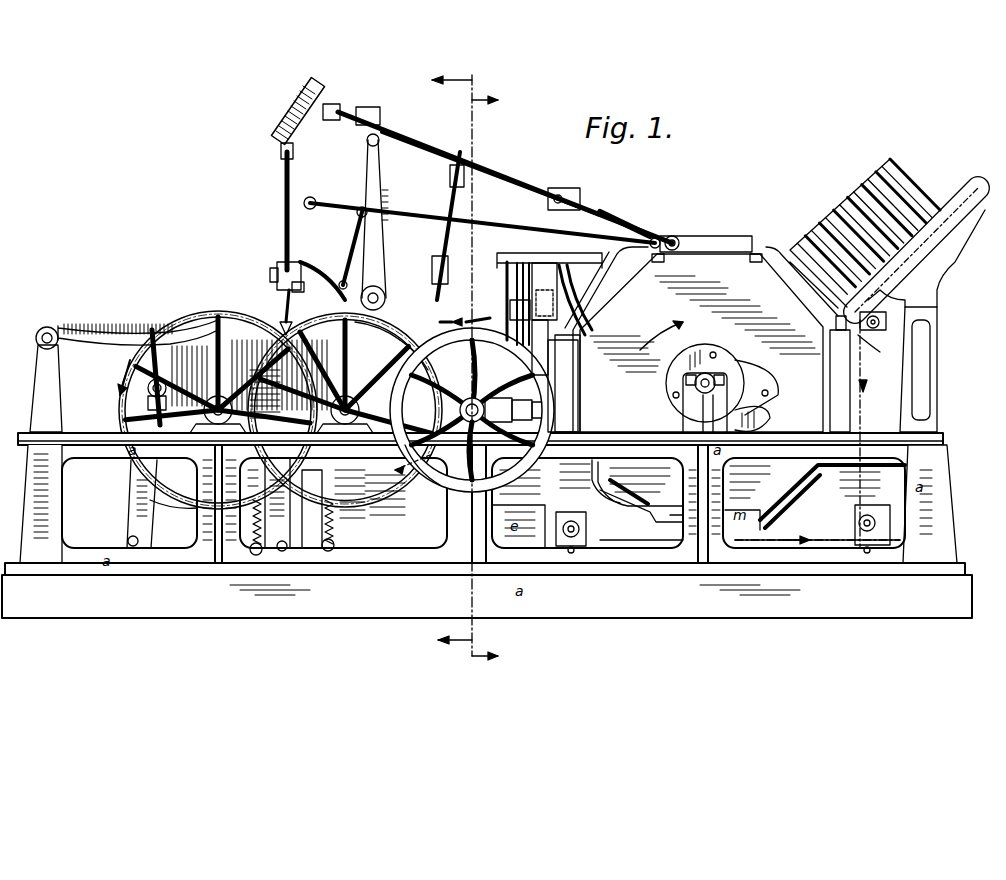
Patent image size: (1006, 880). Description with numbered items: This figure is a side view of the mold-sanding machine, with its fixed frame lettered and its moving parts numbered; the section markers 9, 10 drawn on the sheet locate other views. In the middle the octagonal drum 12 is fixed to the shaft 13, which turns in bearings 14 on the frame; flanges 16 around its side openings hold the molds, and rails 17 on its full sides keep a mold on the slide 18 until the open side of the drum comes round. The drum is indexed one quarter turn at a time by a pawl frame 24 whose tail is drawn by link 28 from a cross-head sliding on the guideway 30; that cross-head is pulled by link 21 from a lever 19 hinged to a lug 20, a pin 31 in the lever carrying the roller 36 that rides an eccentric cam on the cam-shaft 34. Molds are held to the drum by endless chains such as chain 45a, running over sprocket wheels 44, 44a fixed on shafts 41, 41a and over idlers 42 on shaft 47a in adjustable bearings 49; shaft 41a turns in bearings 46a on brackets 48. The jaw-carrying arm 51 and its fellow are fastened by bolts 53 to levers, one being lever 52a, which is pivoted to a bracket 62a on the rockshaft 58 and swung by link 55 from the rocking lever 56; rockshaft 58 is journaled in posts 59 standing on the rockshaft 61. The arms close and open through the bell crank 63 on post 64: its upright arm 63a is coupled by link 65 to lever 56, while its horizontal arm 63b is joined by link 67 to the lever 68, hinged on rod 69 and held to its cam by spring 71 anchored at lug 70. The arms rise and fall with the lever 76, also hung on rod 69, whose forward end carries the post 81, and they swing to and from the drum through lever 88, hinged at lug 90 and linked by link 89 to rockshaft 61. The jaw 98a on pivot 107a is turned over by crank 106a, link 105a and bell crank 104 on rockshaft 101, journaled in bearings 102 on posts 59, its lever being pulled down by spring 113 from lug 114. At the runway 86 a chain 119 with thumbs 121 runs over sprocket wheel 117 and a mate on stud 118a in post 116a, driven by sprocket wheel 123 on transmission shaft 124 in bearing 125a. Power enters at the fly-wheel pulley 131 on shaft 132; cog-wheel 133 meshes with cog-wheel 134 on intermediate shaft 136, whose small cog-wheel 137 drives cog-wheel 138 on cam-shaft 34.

The section line 9- 9 is at (453, 355).
The section line 10- 10 is at (485, 380).
The drum 12 is at (698, 334).
The shaft 13 is at (720, 362).
The bearings 14 is at (690, 385).
The flanges 16 is at (660, 262).
The rails 17 is at (815, 470).
The slide 18 is at (958, 212).
The lever 19 is at (132, 505).
The lug 20 is at (129, 540).
The link 21 is at (205, 318).
The pawl frame 24 is at (756, 387).
The link 28 is at (760, 418).
The guideway 30 is at (590, 481).
The pin 31 is at (147, 405).
The cam-shaft 34 is at (216, 413).
The roller 36 is at (147, 392).
The shaft 41 is at (545, 319).
The shaft 41a is at (872, 332).
The idlers 42 is at (590, 535).
The sprocket wheel 44 is at (578, 306).
The sprocket wheel 44a is at (884, 345).
The endless chain 45a is at (859, 522).
The bearings 46a is at (926, 258).
The shaft 47a is at (590, 526).
The brackets 48 is at (884, 324).
The adjustable bearings 49 is at (566, 540).
The arm 51 is at (616, 222).
The lever 52a is at (520, 182).
The bolts 53 is at (562, 190).
The link 55 is at (370, 108).
The rocking lever 56 is at (332, 120).
The rockshaft 58 is at (367, 143).
The posts 59 is at (382, 192).
The rockshaft 61 is at (384, 296).
The bracket 62a is at (430, 152).
The bell crank 63 is at (278, 266).
The upwardly extending arm 63a is at (284, 212).
The horizontally extending arm 63b is at (303, 293).
The post 64 is at (312, 262).
The link 65 is at (304, 92).
The link 67 is at (284, 292).
The lever 68 is at (226, 320).
The rod 69 is at (40, 334).
The lug 70 is at (252, 556).
The spring 71 is at (165, 372).
The lever 76 is at (98, 350).
The post 81 is at (442, 290).
The runway 86 is at (562, 254).
The lever 88 is at (266, 503).
The link 89 is at (320, 372).
The lug 90 is at (285, 552).
The jaw 98a is at (684, 244).
The rockshaft 101 is at (370, 216).
The bearings 102 is at (372, 238).
The bell crank lever 104 is at (322, 202).
The link 105a is at (520, 228).
The crank 106a is at (654, 238).
The pivot 107a is at (684, 238).
The spring 113 is at (353, 509).
The lug 114 is at (336, 552).
The post 116a is at (550, 370).
The sprocket wheel 117 is at (520, 288).
The stud 118a is at (510, 305).
The chain 119 is at (514, 274).
The thumbs 121 is at (516, 285).
The sprocket wheel 123 is at (532, 406).
The transmission shaft 124 is at (400, 380).
The bearing 125a is at (498, 396).
The pulley 131 is at (440, 480).
The shaft 132 is at (462, 395).
The cog-wheel 133 is at (453, 451).
The cog-wheel 134 is at (380, 324).
The intermediate shaft 136 is at (348, 398).
The small cog-wheel 137 is at (330, 410).
The cog-wheel 138 is at (175, 504).